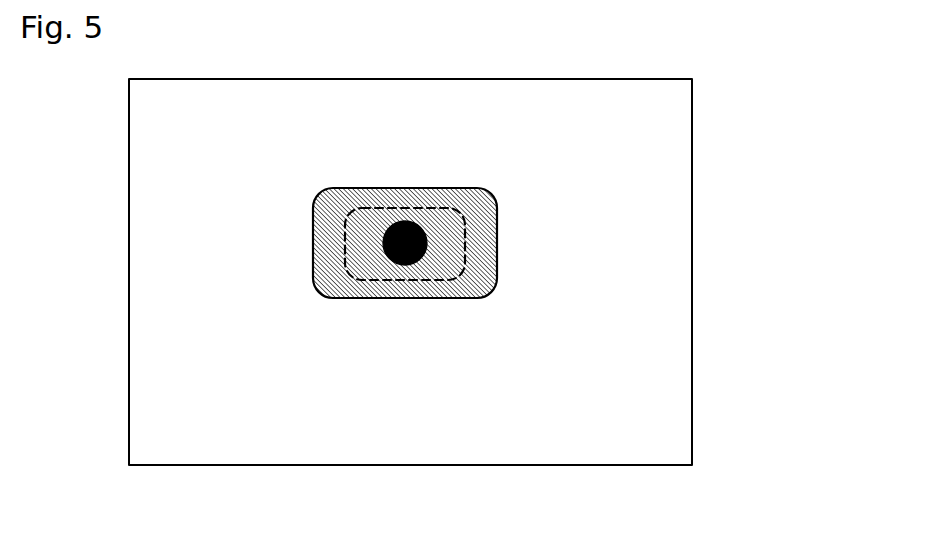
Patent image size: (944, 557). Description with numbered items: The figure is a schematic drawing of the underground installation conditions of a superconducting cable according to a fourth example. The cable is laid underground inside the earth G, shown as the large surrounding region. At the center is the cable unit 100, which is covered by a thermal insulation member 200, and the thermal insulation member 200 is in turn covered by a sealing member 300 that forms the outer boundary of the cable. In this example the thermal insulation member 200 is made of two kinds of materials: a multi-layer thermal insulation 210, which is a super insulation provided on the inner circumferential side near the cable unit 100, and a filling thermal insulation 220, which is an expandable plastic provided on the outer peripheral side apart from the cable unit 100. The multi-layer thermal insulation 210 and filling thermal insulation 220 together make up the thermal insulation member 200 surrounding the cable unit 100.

The earth G is at (208, 423).
The cable unit 100 is at (406, 265).
The thermal insulation member 200 is at (601, 256).
The multi-layer thermal insulation 210 is at (450, 223).
The filling thermal insulation 220 is at (497, 278).
The sealing member 300 is at (313, 243).